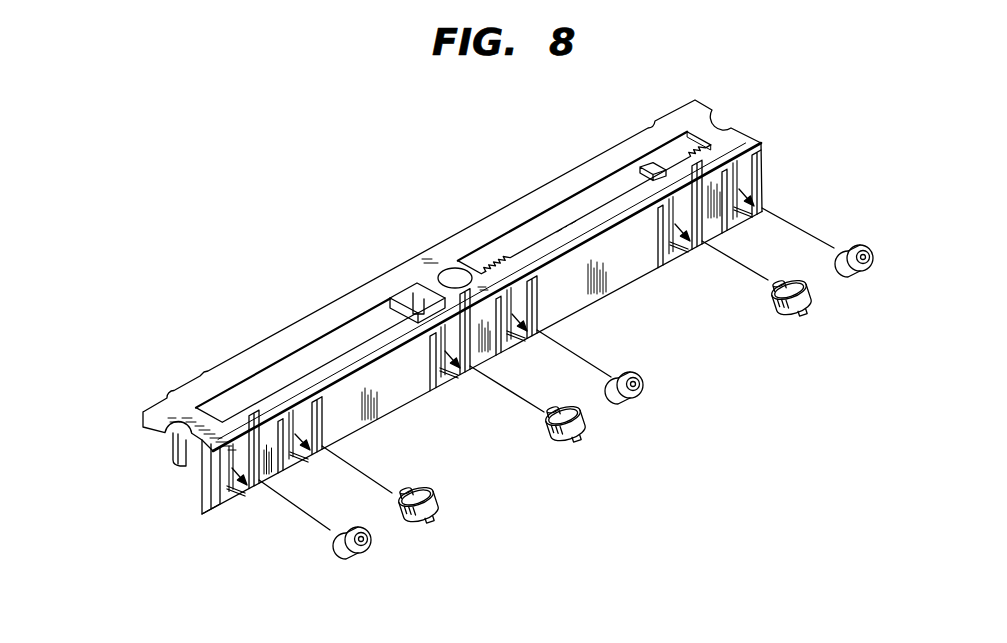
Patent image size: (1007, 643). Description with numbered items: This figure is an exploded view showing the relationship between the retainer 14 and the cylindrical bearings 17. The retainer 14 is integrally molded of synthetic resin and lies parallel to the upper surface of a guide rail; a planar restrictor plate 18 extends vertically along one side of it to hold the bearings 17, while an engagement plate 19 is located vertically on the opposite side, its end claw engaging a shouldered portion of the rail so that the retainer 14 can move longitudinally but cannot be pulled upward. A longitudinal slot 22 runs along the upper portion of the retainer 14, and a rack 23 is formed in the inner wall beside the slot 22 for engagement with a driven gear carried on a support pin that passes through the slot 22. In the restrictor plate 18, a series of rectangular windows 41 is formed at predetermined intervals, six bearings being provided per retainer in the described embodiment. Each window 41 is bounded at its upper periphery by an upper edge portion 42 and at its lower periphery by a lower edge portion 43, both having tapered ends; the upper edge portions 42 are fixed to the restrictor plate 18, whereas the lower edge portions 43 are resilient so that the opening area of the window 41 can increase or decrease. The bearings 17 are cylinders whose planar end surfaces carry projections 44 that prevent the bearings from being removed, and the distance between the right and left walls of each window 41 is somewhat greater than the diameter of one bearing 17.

The retainer 14 is at (440, 257).
The cylindrical bearing 17 is at (628, 405).
The restrictor plate 18 is at (605, 283).
The engagement plate 19 is at (657, 150).
The longitudinal slot 22 is at (598, 183).
The rack 23 is at (500, 264).
The rectangular window 41 is at (758, 178).
The upper edge portion 42 is at (761, 150).
The lower edge portion 43 is at (750, 215).
The projection 44 is at (852, 250).